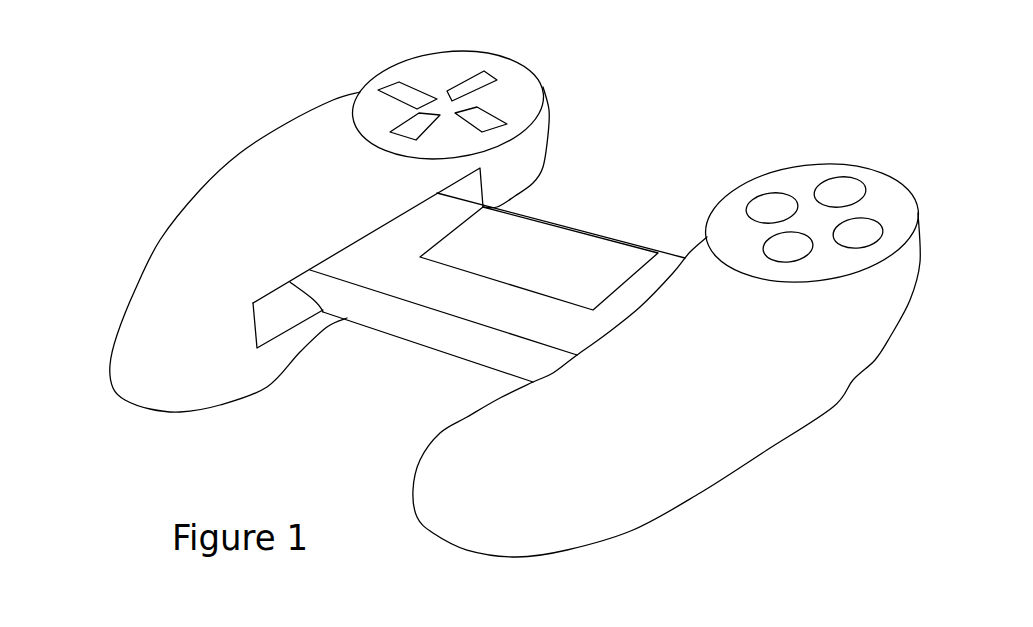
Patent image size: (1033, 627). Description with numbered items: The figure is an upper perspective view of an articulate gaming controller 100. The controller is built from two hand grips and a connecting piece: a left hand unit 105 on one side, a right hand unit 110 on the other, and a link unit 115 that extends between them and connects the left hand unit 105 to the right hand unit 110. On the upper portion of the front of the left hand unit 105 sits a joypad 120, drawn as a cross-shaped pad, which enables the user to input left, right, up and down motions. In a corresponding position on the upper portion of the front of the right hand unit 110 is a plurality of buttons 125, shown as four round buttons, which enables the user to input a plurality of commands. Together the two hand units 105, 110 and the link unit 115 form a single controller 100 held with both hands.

The articulate gaming controller 100 is at (140, 75).
The left hand unit 105 is at (287, 123).
The right hand unit 110 is at (792, 425).
The link unit 115 is at (430, 333).
The joypad 120 is at (498, 72).
The plurality of buttons 125 is at (862, 180).